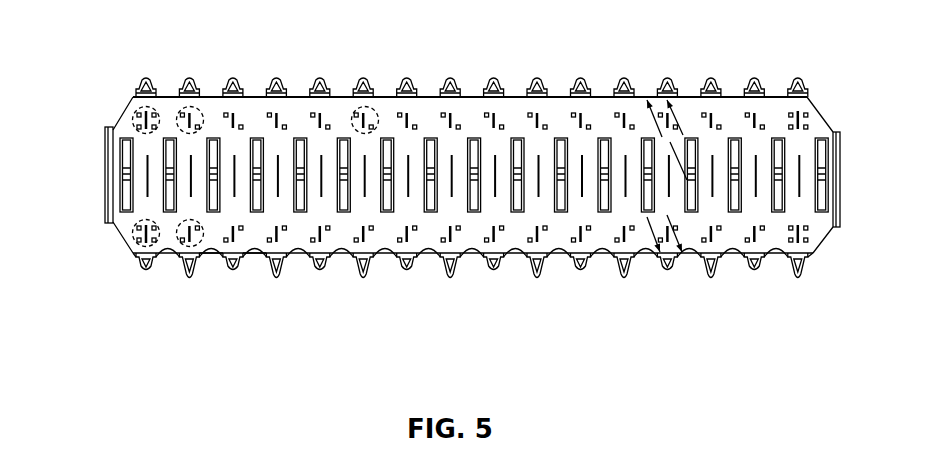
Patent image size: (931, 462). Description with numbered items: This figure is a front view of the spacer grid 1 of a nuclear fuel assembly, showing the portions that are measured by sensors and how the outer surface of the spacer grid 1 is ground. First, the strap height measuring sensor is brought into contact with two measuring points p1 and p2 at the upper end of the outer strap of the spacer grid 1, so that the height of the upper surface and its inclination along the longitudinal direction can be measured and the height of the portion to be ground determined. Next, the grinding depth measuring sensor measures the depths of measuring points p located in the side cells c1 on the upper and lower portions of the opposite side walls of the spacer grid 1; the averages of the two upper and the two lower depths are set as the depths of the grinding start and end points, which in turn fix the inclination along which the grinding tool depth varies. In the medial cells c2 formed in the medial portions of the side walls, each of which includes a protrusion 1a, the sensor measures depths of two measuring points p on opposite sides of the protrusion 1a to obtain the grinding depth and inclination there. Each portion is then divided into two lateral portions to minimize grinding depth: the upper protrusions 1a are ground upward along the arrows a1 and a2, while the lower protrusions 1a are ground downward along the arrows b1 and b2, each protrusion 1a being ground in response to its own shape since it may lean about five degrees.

The spacer grid 1 is at (823, 237).
The protrusion 1a is at (262, 240).
The side cell c1 is at (134, 115).
The medial cell c2 is at (195, 112).
The measuring point p1 is at (169, 95).
The measuring point p2 is at (777, 96).
The measuring point p is at (206, 253).
The arrow a1 is at (660, 137).
The arrow a2 is at (675, 117).
The arrow b1 is at (653, 238).
The arrow b2 is at (670, 240).